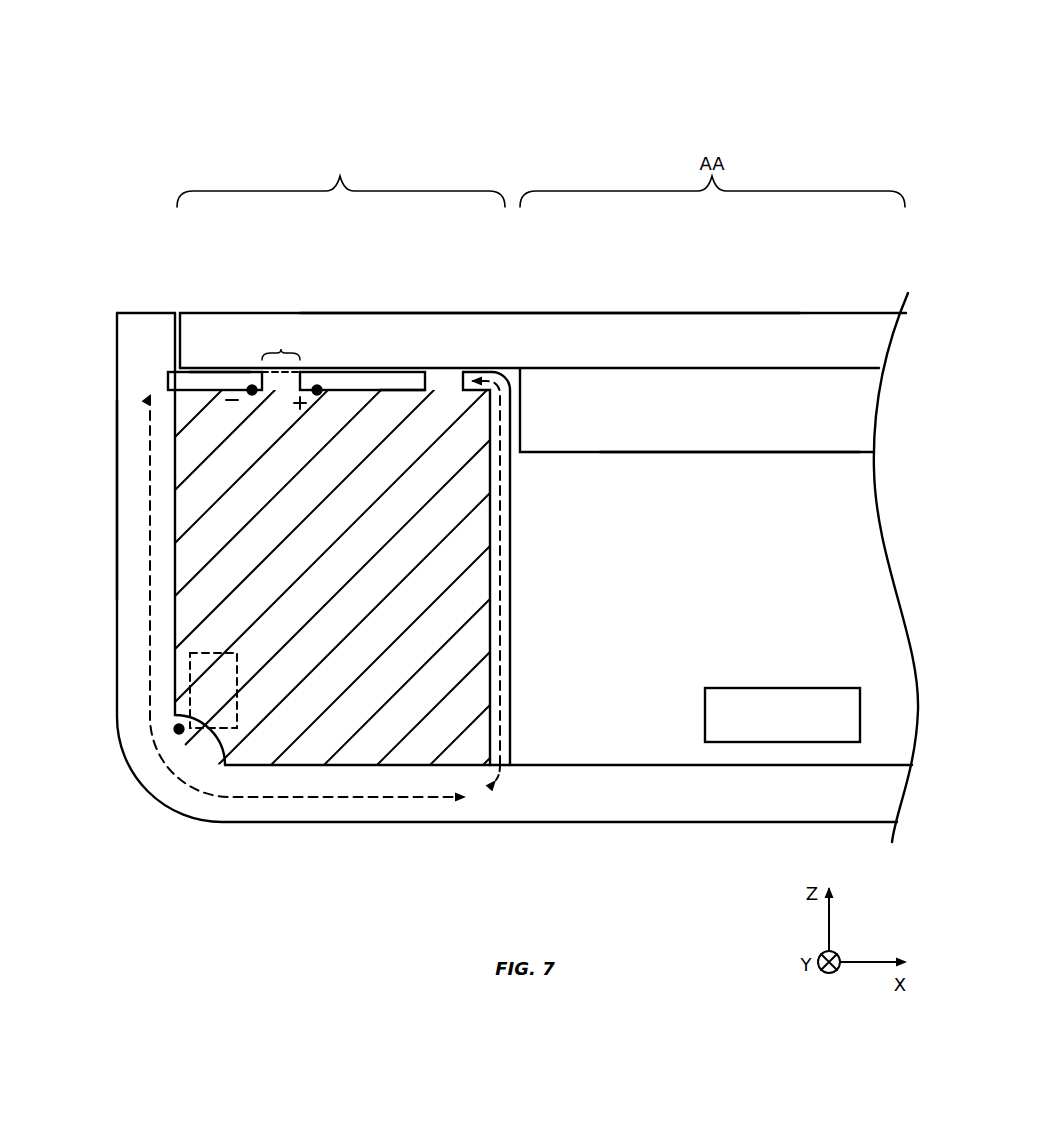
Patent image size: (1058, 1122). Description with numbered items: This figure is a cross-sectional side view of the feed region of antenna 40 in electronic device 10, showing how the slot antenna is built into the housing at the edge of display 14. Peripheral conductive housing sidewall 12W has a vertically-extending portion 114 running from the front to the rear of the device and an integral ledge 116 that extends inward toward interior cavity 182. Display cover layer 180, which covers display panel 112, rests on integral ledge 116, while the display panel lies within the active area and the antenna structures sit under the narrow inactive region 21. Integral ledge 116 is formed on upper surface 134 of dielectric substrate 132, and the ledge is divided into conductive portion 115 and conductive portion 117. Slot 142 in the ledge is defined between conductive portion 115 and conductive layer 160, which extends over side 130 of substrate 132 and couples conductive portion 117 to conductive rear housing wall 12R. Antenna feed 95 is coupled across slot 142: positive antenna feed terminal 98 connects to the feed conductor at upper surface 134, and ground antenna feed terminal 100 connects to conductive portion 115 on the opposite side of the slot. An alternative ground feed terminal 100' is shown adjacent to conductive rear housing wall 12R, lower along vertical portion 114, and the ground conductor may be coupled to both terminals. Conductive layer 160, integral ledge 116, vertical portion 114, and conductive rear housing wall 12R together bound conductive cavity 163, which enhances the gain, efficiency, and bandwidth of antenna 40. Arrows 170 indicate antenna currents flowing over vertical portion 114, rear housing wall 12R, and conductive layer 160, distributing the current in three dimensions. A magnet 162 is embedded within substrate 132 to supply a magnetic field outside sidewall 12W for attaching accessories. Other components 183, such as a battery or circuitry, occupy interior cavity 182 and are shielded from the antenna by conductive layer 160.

The electronic device 10 is at (752, 78).
The peripheral conductive housing sidewall 12W is at (90, 637).
The conductive rear housing wall 12R is at (695, 805).
The display 14 is at (735, 258).
The inactive region 21 is at (341, 180).
The antenna 40 is at (450, 298).
The antenna feed 95 is at (281, 345).
The positive antenna feed terminal 98 is at (317, 396).
The ground antenna feed terminal 100 is at (250, 417).
The ground feed terminal 100' is at (162, 789).
The display panel 112 is at (862, 408).
The vertically-extending portion 114 is at (127, 413).
The conductive portion 115 is at (220, 385).
The integral ledge 116 is at (166, 380).
The conductive portion 117 is at (325, 385).
The side of substrate 130 is at (496, 617).
The dielectric substrate 132 is at (429, 577).
The upper surface 134 is at (393, 385).
The slot 142 is at (443, 393).
The conductive layer 160 is at (503, 650).
The magnet 162 is at (215, 732).
The conductive cavity 163 is at (325, 630).
The antenna currents 170 is at (393, 800).
The display cover layer 180 is at (641, 340).
The interior cavity 182 is at (730, 523).
The components 183 is at (775, 700).